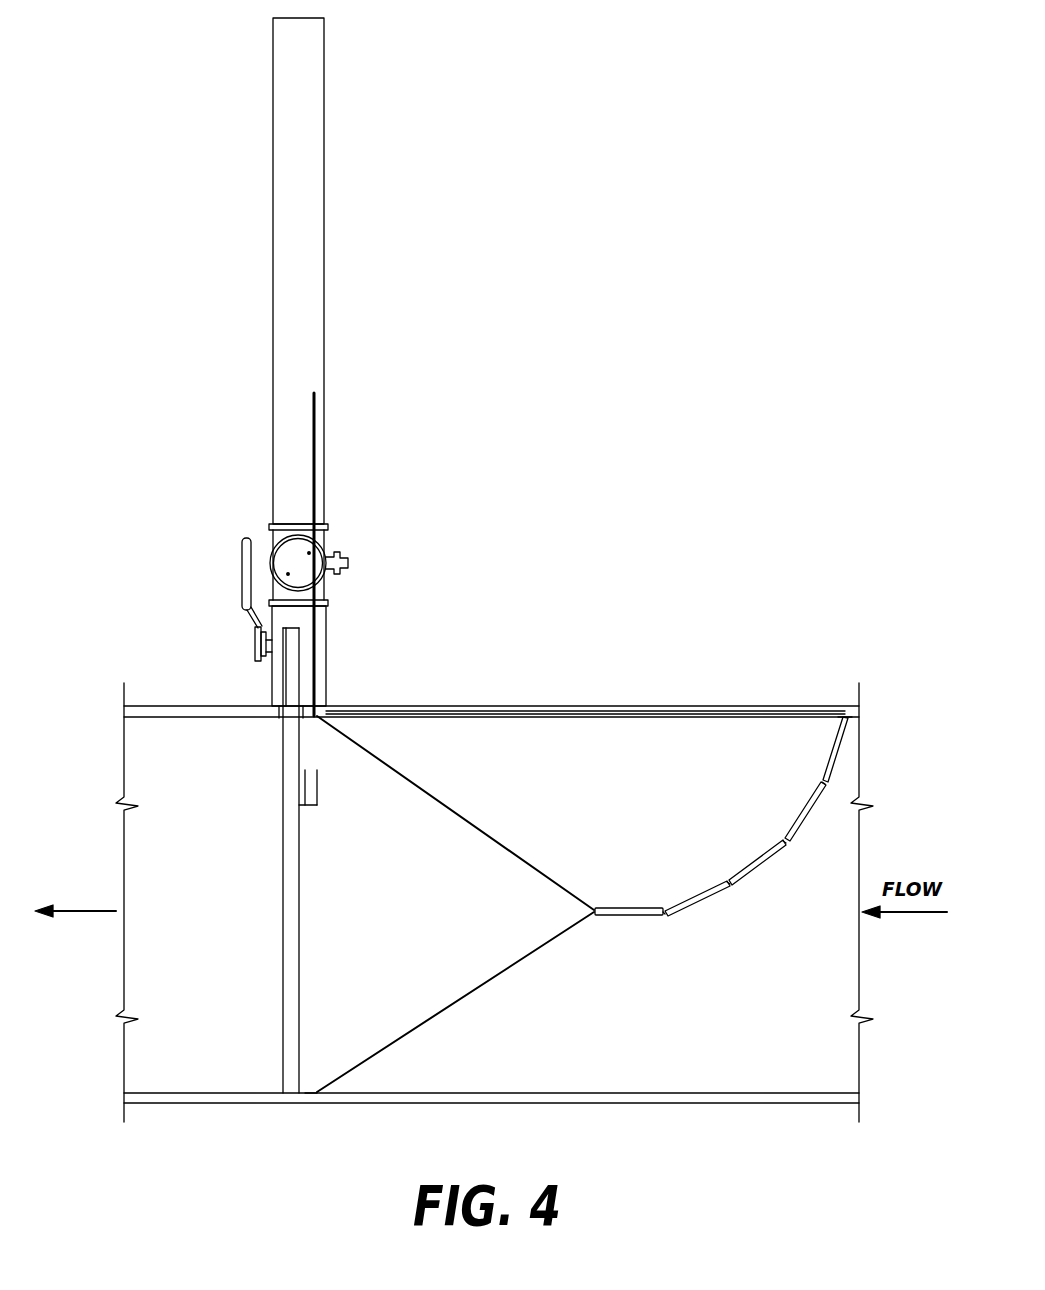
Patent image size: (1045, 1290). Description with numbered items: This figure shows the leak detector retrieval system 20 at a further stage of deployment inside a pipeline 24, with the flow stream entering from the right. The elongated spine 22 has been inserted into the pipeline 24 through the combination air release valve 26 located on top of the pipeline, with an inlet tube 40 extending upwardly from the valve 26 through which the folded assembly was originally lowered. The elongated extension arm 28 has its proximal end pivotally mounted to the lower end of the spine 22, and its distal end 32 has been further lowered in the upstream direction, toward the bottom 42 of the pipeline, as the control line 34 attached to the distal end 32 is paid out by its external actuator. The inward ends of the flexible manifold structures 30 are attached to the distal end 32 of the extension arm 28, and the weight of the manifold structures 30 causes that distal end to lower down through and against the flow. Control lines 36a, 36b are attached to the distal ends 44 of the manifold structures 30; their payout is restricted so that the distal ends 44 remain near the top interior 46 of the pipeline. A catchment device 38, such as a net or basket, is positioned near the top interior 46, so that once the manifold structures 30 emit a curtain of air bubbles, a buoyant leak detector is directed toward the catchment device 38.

The leak detector retrieval system 20 is at (266, 912).
The spine 22 is at (283, 748).
The pipeline 24 is at (705, 707).
The combination air release valve 26 is at (328, 544).
The extension arm 28 is at (470, 996).
The flexible manifold structures 30 is at (752, 876).
The distal end of the extension arm 32 is at (594, 916).
The control line 34 is at (458, 812).
The control line 36a is at (564, 716).
The control line 36b is at (585, 679).
The catchment device 38 is at (318, 790).
The inlet tube 40 is at (273, 212).
The bottom of the pipeline 42 is at (160, 1093).
The distal ends of the manifold structures 44 is at (845, 717).
The top interior of the pipeline 46 is at (160, 716).